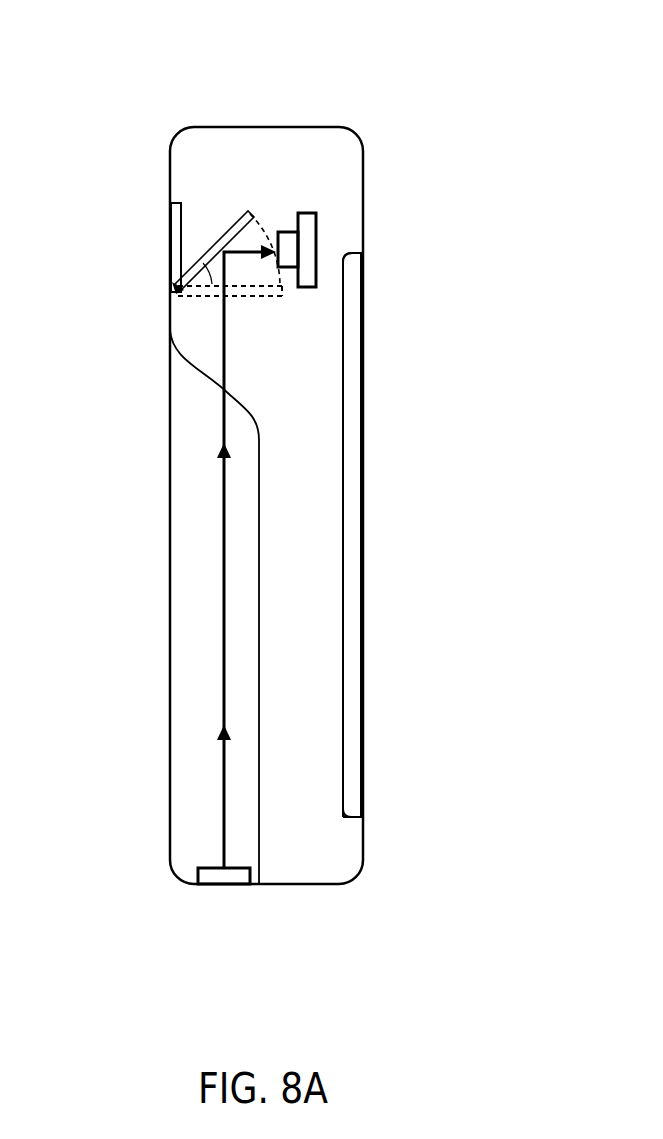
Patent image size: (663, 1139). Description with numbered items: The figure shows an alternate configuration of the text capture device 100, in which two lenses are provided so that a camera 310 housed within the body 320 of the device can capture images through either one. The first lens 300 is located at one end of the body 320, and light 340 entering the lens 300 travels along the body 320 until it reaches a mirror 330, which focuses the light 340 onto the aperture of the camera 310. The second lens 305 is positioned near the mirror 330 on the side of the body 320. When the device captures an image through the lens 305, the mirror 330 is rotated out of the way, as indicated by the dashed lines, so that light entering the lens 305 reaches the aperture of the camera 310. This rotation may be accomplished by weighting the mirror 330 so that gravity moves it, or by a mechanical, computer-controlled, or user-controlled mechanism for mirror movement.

The text capture device 100 is at (257, 103).
The lens 300 is at (220, 873).
The lens 305 is at (175, 238).
The camera 310 is at (307, 246).
The body 320 is at (362, 874).
The mirror 330 is at (195, 293).
The light 340 is at (223, 590).